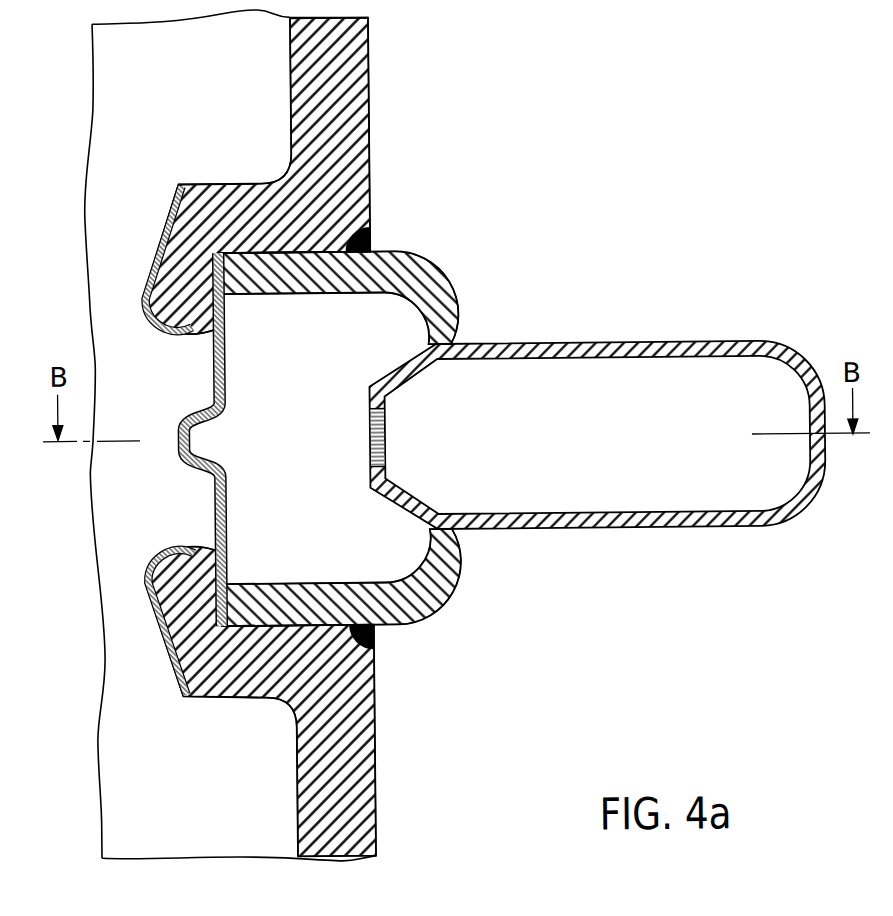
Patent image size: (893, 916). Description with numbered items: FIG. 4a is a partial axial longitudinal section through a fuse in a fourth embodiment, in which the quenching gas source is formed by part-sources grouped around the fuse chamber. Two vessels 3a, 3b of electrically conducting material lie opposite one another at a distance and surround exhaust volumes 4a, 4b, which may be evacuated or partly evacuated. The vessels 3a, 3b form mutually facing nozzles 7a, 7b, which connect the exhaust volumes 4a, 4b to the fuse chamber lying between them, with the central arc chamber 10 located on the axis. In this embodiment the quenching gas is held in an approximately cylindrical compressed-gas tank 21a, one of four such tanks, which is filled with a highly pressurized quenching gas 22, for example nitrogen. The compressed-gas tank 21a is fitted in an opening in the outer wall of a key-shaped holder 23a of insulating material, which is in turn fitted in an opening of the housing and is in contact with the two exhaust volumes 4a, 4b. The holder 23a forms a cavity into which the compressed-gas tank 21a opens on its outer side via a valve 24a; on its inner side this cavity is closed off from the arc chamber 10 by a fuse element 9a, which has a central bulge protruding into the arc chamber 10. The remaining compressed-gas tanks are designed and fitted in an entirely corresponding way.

The vessel 3a is at (349, 64).
The vessel 3b is at (351, 820).
The exhaust volume 4a is at (209, 85).
The exhaust volume 4b is at (206, 818).
The nozzle 7a is at (141, 302).
The nozzle 7b is at (141, 583).
The fuse element 9a is at (214, 387).
The arc chamber 10 is at (145, 481).
The compressed-gas tank 21a is at (712, 347).
The quenching gas 22 is at (607, 474).
The holder 23a is at (425, 285).
The valve 24a is at (368, 434).